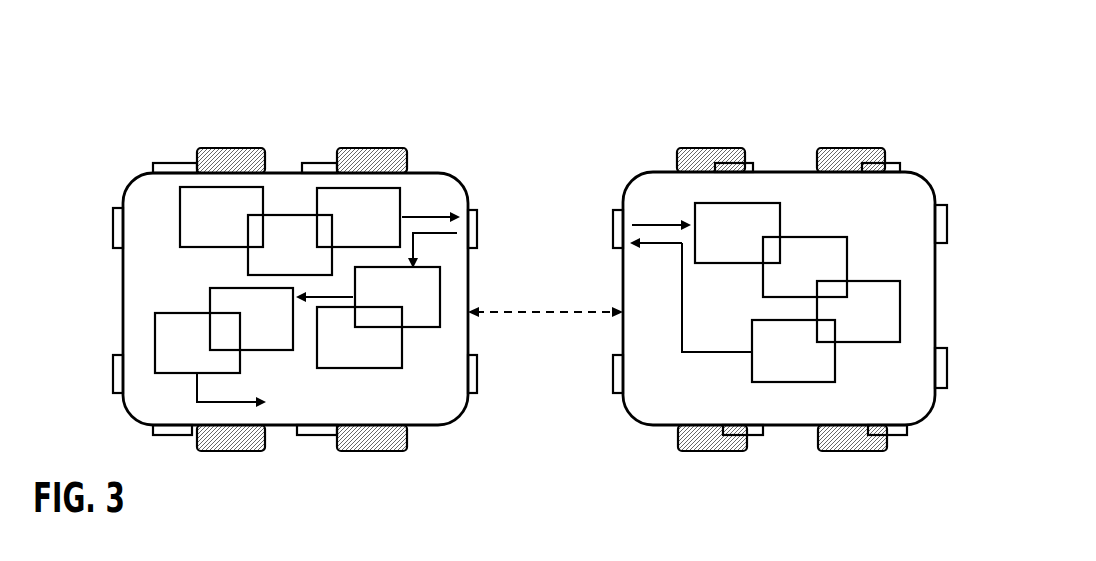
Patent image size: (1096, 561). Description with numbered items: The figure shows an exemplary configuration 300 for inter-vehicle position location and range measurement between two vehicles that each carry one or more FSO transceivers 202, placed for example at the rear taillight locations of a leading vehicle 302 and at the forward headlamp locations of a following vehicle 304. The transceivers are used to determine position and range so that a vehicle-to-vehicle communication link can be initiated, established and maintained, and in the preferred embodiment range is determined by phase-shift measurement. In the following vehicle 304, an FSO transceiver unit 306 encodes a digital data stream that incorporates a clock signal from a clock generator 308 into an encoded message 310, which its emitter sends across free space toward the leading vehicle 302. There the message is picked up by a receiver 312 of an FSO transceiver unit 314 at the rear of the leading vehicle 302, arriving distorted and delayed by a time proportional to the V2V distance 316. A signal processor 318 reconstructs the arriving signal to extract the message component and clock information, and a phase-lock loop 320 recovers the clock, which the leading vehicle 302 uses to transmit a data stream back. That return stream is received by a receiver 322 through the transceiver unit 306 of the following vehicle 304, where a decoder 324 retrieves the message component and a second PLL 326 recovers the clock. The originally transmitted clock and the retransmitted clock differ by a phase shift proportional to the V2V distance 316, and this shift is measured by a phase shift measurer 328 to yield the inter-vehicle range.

The configuration for inter-vehicle position location and range measurement 300 is at (180, 104).
The FSO transceiver 202 is at (113, 228).
The leading vehicle 302 is at (788, 425).
The following vehicle 304 is at (440, 425).
The FSO transceiver unit 306 is at (180, 210).
The clock generator 308 is at (280, 215).
The encoded message 310 is at (330, 188).
The receiver 312 is at (782, 218).
The FSO transceiver unit 314 is at (612, 222).
The V2V distance 316 is at (548, 317).
The signal processor 318 is at (845, 237).
The phase-lock loop 320 is at (868, 342).
The receiver 322 is at (413, 325).
The decoder 324 is at (378, 368).
The PLL 326 is at (282, 348).
The phase shift measurer 328 is at (153, 345).